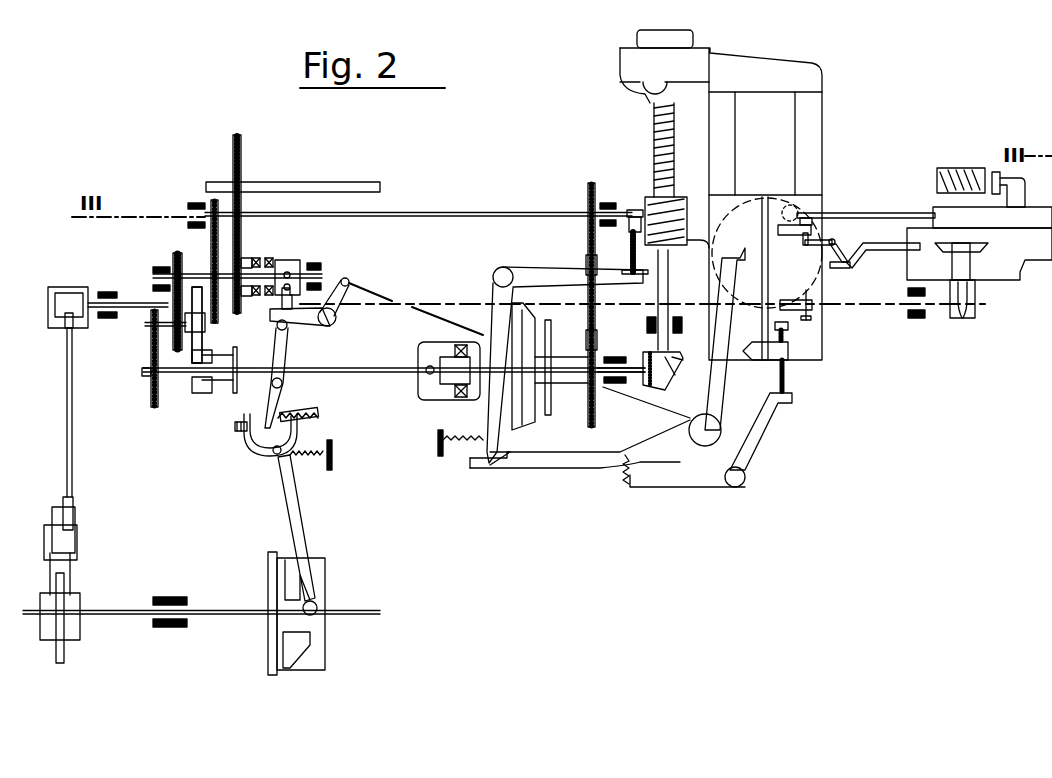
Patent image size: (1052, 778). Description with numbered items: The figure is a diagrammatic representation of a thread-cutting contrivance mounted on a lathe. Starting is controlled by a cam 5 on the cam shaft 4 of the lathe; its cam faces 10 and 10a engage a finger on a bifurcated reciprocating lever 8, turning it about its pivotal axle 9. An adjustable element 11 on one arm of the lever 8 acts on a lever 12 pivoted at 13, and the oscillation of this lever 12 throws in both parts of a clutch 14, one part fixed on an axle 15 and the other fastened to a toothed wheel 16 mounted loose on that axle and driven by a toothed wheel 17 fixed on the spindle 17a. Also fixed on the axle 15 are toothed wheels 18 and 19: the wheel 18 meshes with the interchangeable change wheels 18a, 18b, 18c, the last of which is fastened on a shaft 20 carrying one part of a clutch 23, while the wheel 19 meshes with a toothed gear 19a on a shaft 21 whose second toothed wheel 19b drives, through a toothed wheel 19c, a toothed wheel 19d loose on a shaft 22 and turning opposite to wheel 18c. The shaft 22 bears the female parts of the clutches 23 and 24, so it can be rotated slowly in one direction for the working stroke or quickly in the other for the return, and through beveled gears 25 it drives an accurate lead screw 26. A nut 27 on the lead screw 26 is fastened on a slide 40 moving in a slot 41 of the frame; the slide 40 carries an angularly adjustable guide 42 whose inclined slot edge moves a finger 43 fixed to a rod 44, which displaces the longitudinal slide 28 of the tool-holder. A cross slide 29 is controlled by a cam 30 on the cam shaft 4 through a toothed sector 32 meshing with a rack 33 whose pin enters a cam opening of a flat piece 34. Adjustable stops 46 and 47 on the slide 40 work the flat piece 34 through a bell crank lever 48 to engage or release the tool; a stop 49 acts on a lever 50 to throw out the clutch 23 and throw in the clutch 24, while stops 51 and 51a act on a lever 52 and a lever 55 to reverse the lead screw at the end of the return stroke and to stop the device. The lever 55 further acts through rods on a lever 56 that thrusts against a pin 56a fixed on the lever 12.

The cam shaft 4 is at (212, 610).
The cam 5 is at (296, 613).
The reciprocating lever 8 is at (295, 505).
The pivotal axle 9 is at (274, 455).
The cam face 10 is at (318, 601).
The cam face 10a is at (305, 652).
The adjustable element 11 is at (240, 432).
The lever 12 is at (283, 354).
The pivot 13 is at (272, 383).
The clutch 14 is at (258, 262).
The axle 15 is at (320, 274).
The toothed wheel 16 is at (245, 263).
The toothed wheel 17 is at (241, 146).
The spindle 17a is at (372, 182).
The toothed wheel 18 is at (173, 262).
The interchangeable toothed wheel 18a is at (181, 336).
The interchangeable toothed wheel 18b is at (151, 321).
The toothed wheel 18c is at (151, 393).
The toothed wheel 19 is at (211, 262).
The toothed gear 19a is at (211, 204).
The toothed wheel 19b is at (596, 195).
The toothed wheel 19c is at (588, 262).
The toothed wheel 19d is at (597, 340).
The shaft 20 is at (382, 372).
The shaft 21 is at (455, 213).
The shaft 22 is at (598, 380).
The clutch 23 is at (462, 385).
The clutch 24 is at (537, 405).
The beveled gears 25 is at (670, 378).
The lead screw 26 is at (676, 148).
The nut 27 is at (682, 205).
The longitudinal slide 28 is at (992, 198).
The cross slide 29 is at (979, 254).
The cam 30 is at (62, 592).
The toothed sector 32 is at (970, 275).
The rack 33 is at (958, 255).
The flat piece 34 is at (880, 250).
The slide 40 is at (797, 339).
The slot 41 is at (770, 155).
The guide 42 is at (765, 283).
The finger 43 is at (795, 208).
The rod 44 is at (888, 213).
The adjustable stop 46 is at (812, 305).
The adjustable stop 47 is at (805, 230).
The bell crank lever 48 is at (838, 252).
The adjustable stop 49 is at (765, 355).
The lever 50 is at (718, 400).
The adjustable stop 51 is at (648, 250).
The adjustable stop 51a is at (787, 385).
The lever 52 is at (524, 268).
The lever 55 is at (760, 432).
The lever 56 is at (340, 305).
The pin 56a is at (278, 326).